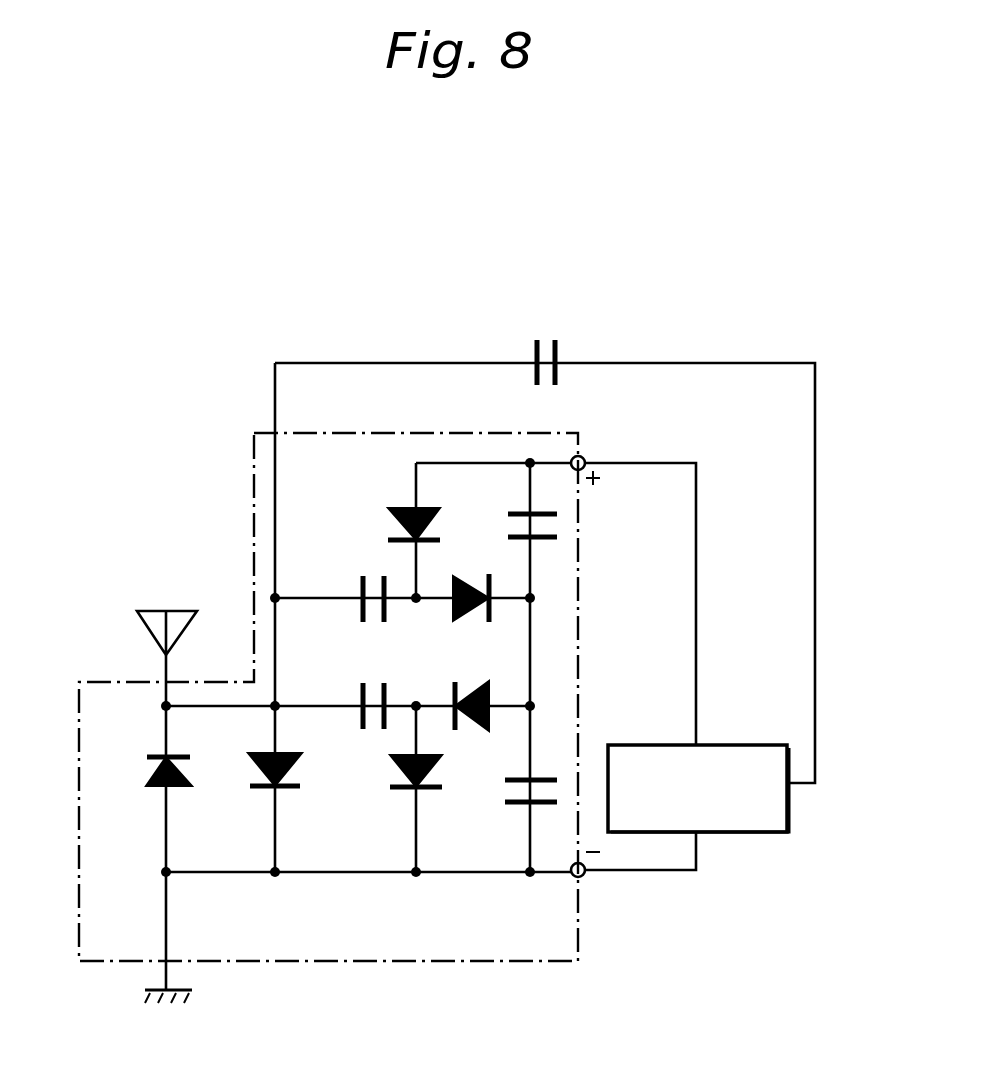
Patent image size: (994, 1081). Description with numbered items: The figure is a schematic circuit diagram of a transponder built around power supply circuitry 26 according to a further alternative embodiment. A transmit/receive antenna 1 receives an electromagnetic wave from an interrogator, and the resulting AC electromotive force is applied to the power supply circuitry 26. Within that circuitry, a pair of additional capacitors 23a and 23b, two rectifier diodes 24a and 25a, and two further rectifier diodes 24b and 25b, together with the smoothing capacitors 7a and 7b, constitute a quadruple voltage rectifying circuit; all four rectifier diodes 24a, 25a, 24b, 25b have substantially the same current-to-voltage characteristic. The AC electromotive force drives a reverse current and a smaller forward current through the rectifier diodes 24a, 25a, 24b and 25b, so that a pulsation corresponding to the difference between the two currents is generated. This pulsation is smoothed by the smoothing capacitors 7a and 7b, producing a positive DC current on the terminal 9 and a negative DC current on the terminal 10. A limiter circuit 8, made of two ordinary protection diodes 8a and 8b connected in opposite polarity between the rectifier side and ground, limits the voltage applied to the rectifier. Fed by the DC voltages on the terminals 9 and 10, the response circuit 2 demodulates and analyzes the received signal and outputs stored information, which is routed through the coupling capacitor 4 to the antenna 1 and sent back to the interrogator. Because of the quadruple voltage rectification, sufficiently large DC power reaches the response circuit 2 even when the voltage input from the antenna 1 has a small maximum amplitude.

The transmit/receive antenna 1 is at (156, 608).
The response circuit 2 is at (745, 834).
The coupling capacitor 4 is at (563, 347).
The smoothing capacitor 7a is at (515, 805).
The smoothing capacitor 7b is at (556, 529).
The limiter circuit 8 is at (202, 778).
The protection diode 8a is at (256, 788).
The protection diode 8b is at (147, 786).
The terminal 9 is at (586, 457).
The terminal 10 is at (582, 878).
The additional capacitor 23a is at (358, 699).
The additional capacitor 23b is at (358, 595).
The rectifier diode 24a is at (397, 790).
The rectifier diode 24b is at (400, 510).
The rectifier diode 25a is at (492, 720).
The rectifier diode 25b is at (492, 606).
The power supply circuitry 26 is at (478, 963).